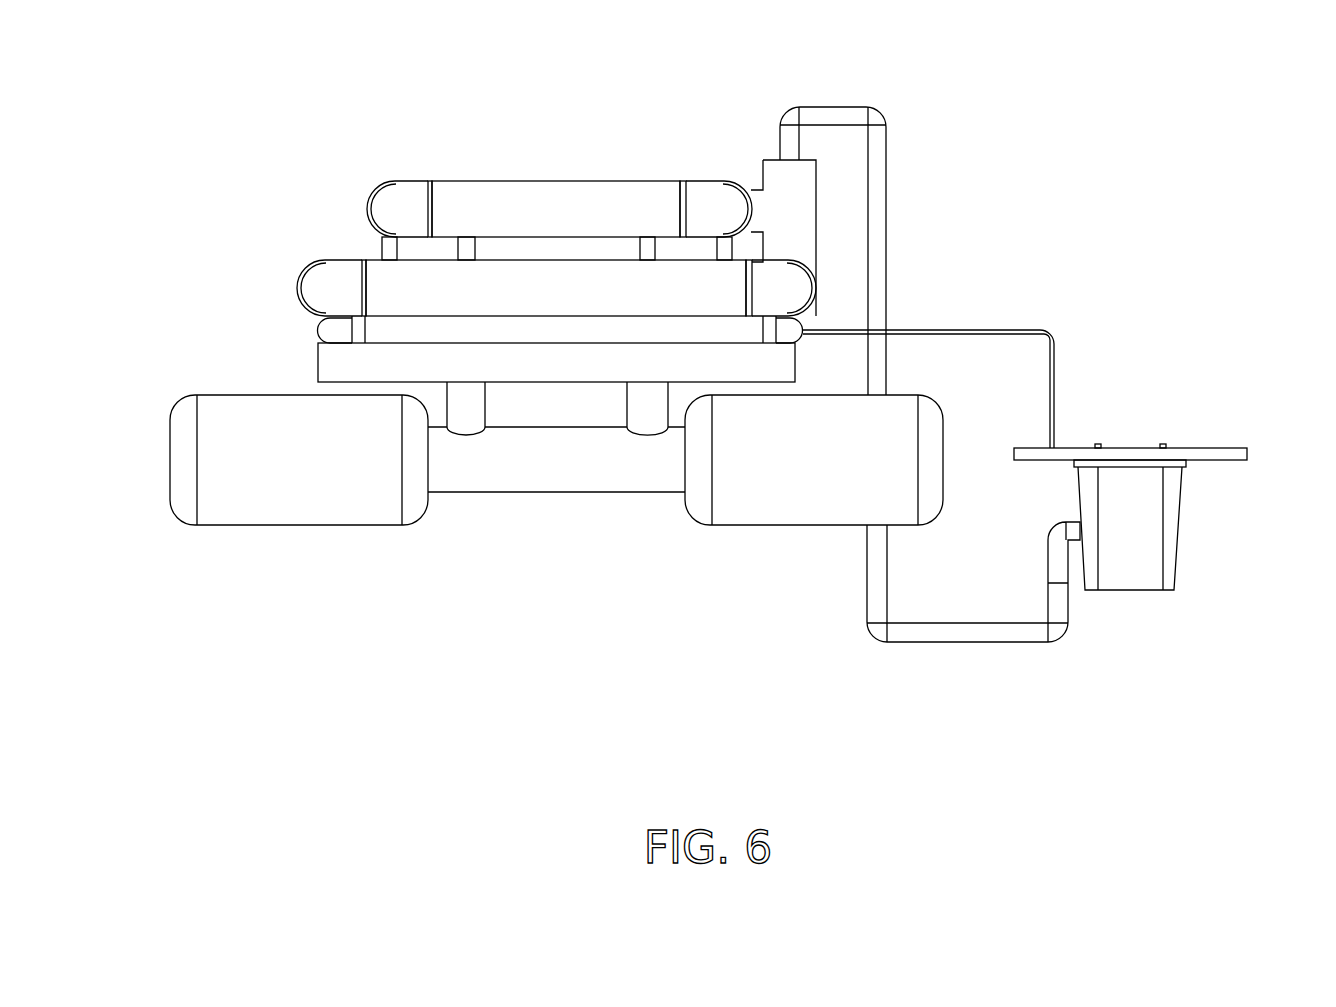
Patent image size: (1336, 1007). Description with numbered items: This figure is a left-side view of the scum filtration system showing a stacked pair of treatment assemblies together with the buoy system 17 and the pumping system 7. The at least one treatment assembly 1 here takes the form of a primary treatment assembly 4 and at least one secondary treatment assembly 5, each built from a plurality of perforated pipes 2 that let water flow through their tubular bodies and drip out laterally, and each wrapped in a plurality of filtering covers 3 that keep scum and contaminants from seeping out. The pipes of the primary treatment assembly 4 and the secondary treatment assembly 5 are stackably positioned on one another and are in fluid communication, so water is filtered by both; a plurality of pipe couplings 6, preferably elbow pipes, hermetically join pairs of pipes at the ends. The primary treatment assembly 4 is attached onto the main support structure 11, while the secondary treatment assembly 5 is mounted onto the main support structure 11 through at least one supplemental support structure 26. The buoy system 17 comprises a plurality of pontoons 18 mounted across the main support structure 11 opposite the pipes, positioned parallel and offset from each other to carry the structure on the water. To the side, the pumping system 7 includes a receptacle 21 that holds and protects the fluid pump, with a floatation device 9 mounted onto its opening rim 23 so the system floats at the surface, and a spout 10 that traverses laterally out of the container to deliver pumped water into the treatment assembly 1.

The treatment assembly 1 is at (272, 72).
The perforated pipes 2 is at (431, 181).
The filtering covers 3 is at (565, 182).
The primary treatment assembly 4 is at (338, 194).
The secondary treatment assembly 5 is at (278, 277).
The pipe couplings 6 is at (705, 190).
The pumping system 7 is at (1213, 377).
The floatation device 9 is at (1241, 454).
The spout 10 is at (1052, 551).
The main support structure 11 is at (316, 337).
The buoy system 17 is at (158, 362).
The pontoons 18 is at (178, 466).
The receptacle 21 is at (1171, 531).
The opening rim 23 is at (1187, 463).
The supplemental support structure 26 is at (364, 251).